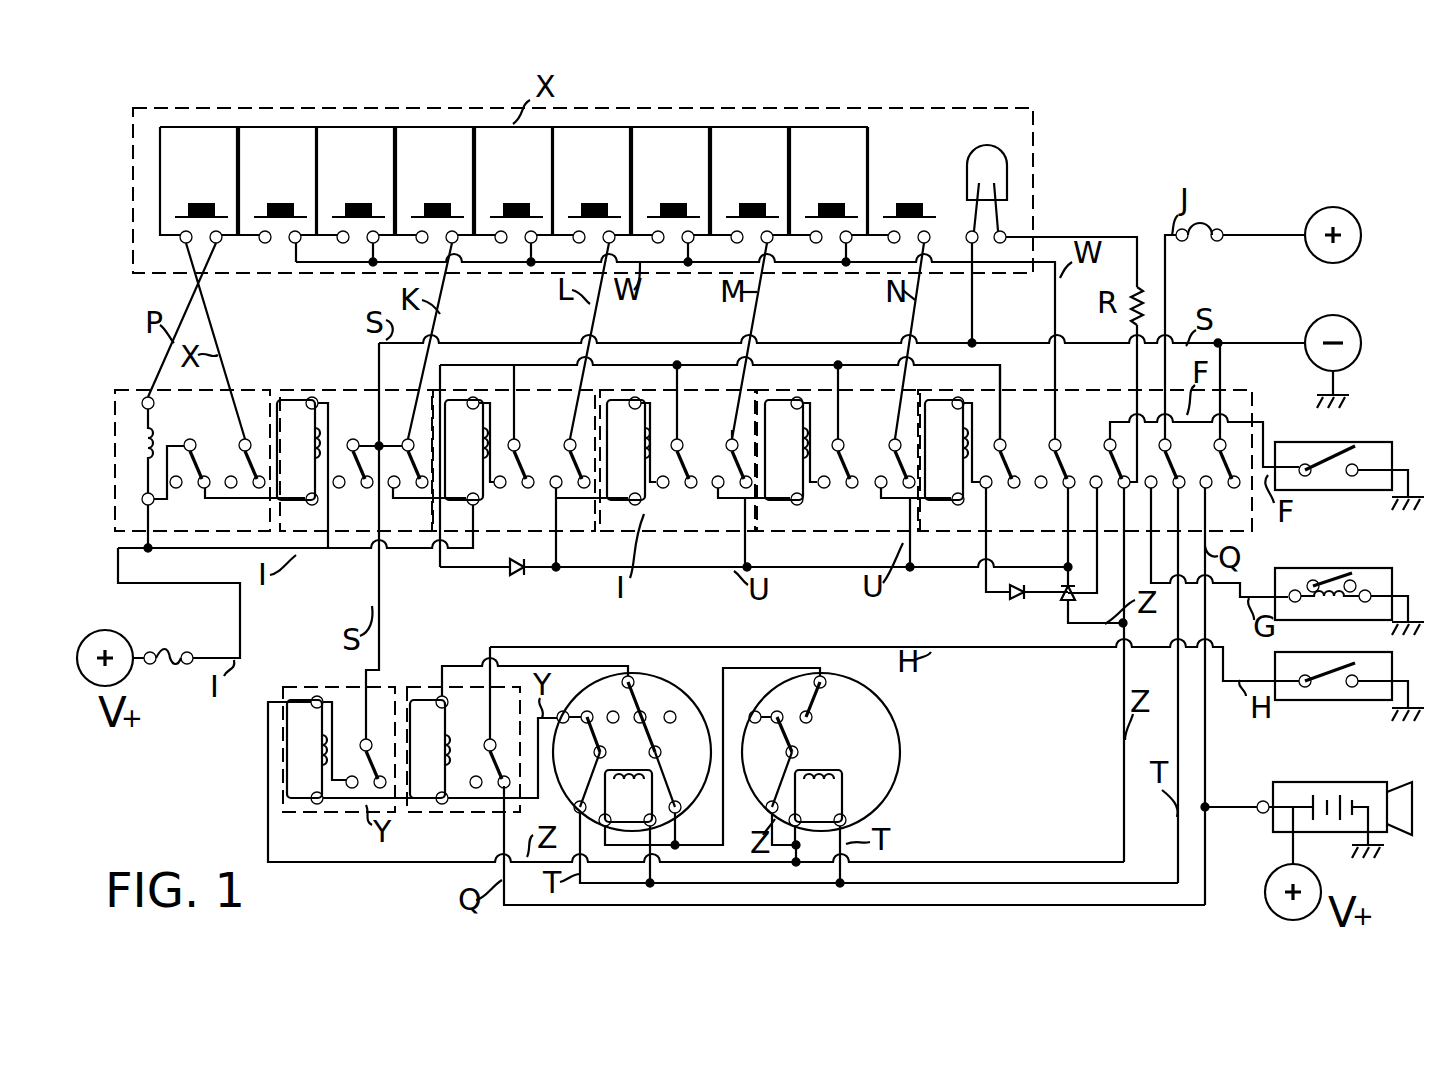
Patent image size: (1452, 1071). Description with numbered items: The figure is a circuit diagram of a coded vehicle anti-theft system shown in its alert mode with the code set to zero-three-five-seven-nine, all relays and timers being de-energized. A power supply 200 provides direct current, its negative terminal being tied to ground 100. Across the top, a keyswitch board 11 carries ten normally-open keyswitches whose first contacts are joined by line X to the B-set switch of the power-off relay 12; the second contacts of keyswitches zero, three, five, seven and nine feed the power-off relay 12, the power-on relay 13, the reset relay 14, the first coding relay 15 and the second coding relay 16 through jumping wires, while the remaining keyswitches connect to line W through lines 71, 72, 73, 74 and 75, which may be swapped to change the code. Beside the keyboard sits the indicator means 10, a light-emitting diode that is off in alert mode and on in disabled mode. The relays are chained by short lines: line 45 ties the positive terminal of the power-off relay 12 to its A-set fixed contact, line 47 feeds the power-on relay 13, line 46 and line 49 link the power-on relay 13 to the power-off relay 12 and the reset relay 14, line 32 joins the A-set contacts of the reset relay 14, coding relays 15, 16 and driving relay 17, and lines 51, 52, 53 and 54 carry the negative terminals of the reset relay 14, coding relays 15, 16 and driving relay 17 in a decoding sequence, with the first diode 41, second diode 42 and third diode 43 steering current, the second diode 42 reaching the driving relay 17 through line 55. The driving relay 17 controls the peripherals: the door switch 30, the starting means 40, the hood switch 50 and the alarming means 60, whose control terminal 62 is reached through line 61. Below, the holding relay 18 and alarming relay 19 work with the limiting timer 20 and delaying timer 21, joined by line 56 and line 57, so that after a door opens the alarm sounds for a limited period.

The indicator means 10 is at (1010, 158).
The keyswitch board 11 is at (133, 154).
The power-off relay 12 is at (128, 388).
The power-on relay 13 is at (356, 388).
The reset relay 14 is at (523, 390).
The first coding relay 15 is at (692, 388).
The second coding relay 16 is at (855, 386).
The driving relay 17 is at (1085, 386).
The holding relay 18 is at (342, 686).
The alarming relay 19 is at (440, 689).
The limiting timer 20 is at (646, 680).
The delaying timer 21 is at (898, 726).
The first sensing means 30 is at (1389, 444).
The line 32 is at (545, 444).
The starting means 40 is at (1347, 569).
The first diode 41 is at (509, 574).
The second diode 42 is at (997, 596).
The third diode 43 is at (1065, 609).
The line 45 is at (176, 444).
The line 46 is at (306, 398).
The line 47 is at (225, 506).
The line 49 is at (504, 438).
The second sensing means 50 is at (1332, 655).
The line 51 is at (460, 396).
The line 52 is at (618, 390).
The line 53 is at (782, 388).
The line 54 is at (942, 388).
The line 55 is at (1040, 590).
The line 56 is at (723, 719).
The line 57 is at (544, 665).
The alarming means 60 is at (1337, 782).
The line 61 is at (1228, 809).
The control terminal 62 is at (1266, 802).
The line 71 is at (293, 252).
The line 72 is at (371, 263).
The line 73 is at (532, 262).
The line 74 is at (688, 262).
The line 75 is at (848, 264).
The ground 100 is at (1357, 400).
The power supply 200 is at (1403, 238).